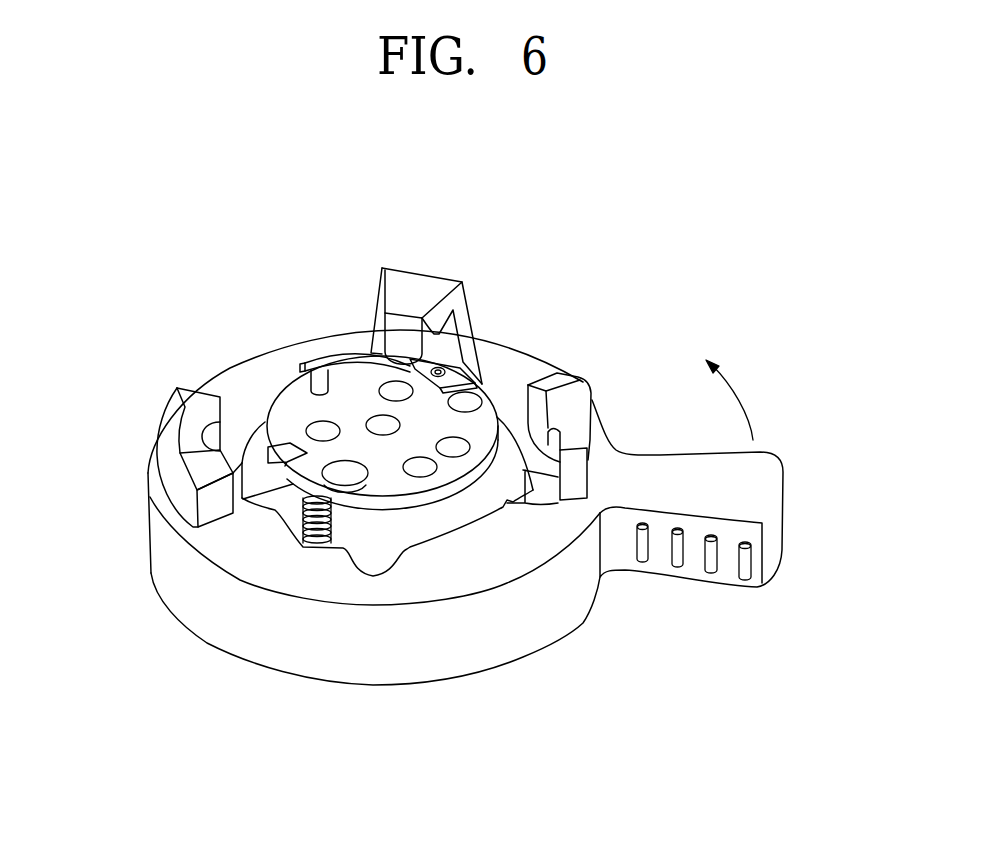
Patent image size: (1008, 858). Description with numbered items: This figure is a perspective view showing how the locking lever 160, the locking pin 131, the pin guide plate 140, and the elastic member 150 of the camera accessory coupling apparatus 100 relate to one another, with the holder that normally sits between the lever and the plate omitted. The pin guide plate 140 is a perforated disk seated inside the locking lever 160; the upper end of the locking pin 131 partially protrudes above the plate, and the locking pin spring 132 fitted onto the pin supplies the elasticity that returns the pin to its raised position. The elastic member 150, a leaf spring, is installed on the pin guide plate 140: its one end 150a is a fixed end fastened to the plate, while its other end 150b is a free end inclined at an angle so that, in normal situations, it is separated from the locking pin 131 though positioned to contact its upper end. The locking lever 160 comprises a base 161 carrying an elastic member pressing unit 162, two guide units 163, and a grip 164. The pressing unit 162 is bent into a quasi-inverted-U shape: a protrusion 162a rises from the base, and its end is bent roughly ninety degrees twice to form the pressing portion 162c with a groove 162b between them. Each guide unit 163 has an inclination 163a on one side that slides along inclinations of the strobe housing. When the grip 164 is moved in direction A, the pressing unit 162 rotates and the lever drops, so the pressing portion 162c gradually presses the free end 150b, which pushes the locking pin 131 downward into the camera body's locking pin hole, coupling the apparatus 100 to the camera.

The camera accessory coupling apparatus 100 is at (601, 192).
The locking pin 131 is at (318, 378).
The locking pin spring 132 is at (303, 530).
The pin guide plate 140 is at (427, 497).
The elastic member 150 is at (353, 364).
The one end of elastic member 150a is at (450, 377).
The other end of elastic member 150b is at (308, 366).
The locking lever 160 is at (210, 372).
The base 161 is at (175, 590).
The elastic member pressing unit 162 is at (418, 283).
The protrusion 162a is at (462, 333).
The groove 162b is at (463, 312).
The pressing portion 162c is at (390, 332).
The guide unit 163 is at (185, 407).
The inclination 163a is at (203, 474).
The grip 164 is at (763, 488).